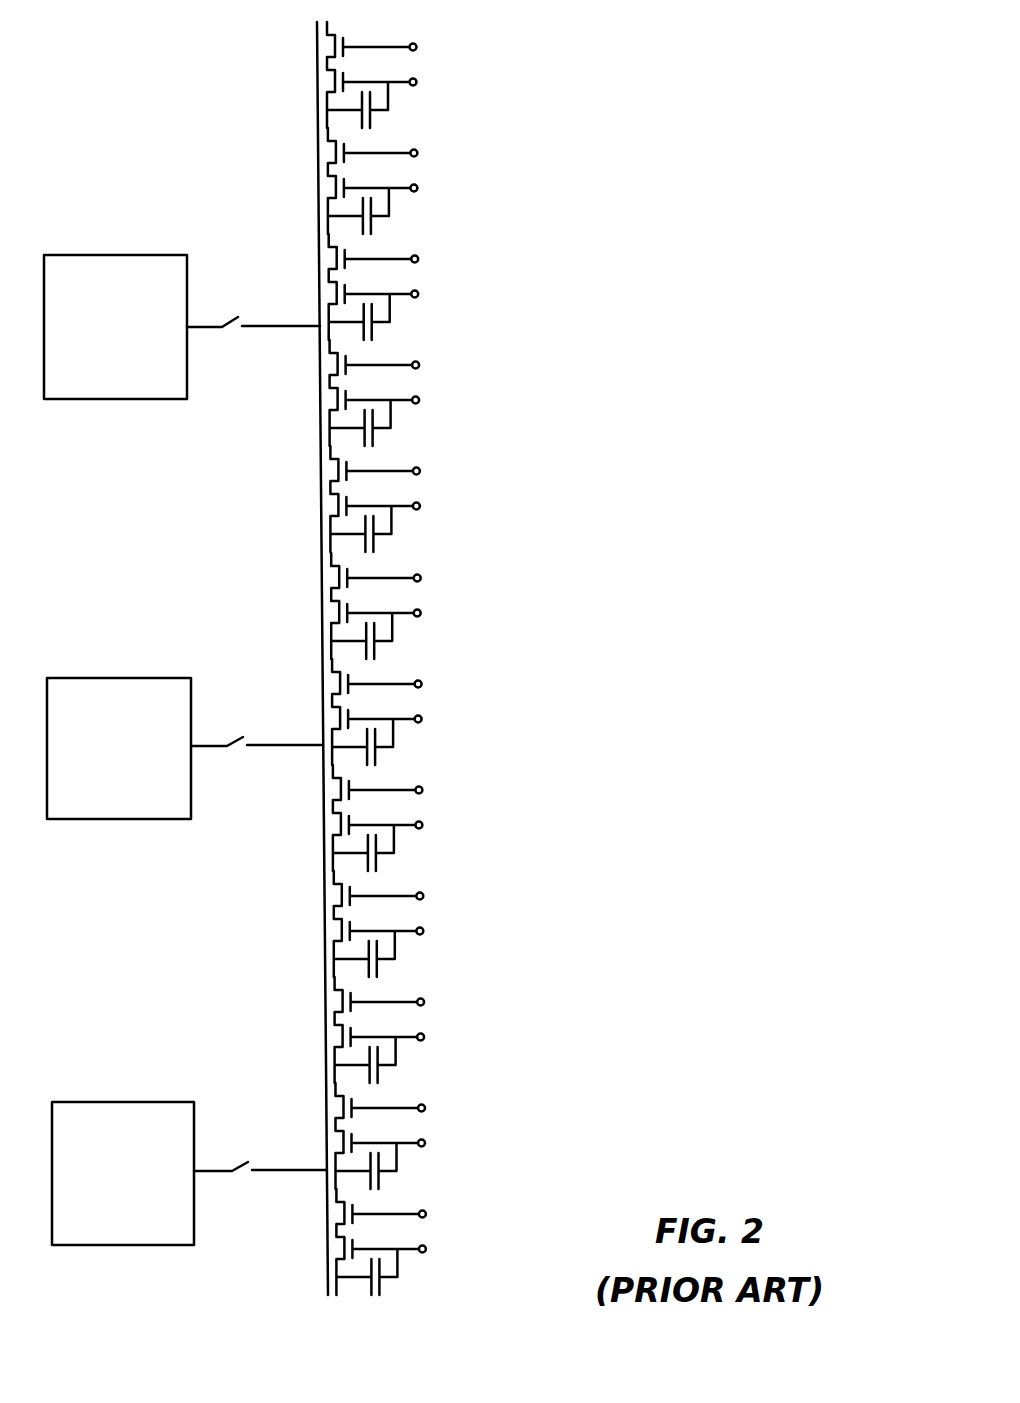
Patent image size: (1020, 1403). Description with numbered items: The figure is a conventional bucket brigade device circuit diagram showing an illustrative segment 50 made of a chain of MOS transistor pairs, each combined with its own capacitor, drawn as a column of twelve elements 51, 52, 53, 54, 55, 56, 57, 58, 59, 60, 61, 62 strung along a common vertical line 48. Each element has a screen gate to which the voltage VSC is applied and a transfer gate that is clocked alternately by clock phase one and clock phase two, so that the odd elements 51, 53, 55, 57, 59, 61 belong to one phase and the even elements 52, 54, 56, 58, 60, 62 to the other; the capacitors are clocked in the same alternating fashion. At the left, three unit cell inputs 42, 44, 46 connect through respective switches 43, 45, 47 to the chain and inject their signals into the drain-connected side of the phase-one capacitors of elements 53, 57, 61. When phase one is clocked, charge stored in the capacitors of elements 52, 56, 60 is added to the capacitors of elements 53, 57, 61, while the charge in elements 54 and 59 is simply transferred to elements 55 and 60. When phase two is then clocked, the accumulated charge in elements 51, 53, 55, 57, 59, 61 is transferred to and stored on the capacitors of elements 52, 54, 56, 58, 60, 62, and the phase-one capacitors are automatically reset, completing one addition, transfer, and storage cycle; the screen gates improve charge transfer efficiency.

The unit cell input 42 is at (103, 385).
The input switch 43 is at (237, 316).
The unit cell input 44 is at (107, 804).
The input switch 45 is at (241, 736).
The unit cell input 46 is at (111, 1230).
The input switch 47 is at (246, 1161).
The common bus line 48 is at (316, 73).
The segment of a bucket brigade device 50 is at (120, 30).
The element 51 is at (488, 65).
The element 52 is at (488, 171).
The element 53 is at (488, 277).
The element 54 is at (488, 383).
The element 55 is at (488, 489).
The element 56 is at (488, 596).
The element 57 is at (488, 702).
The element 58 is at (488, 808).
The element 59 is at (488, 914).
The element 60 is at (488, 1020).
The element 61 is at (488, 1126).
The element 62 is at (488, 1232).